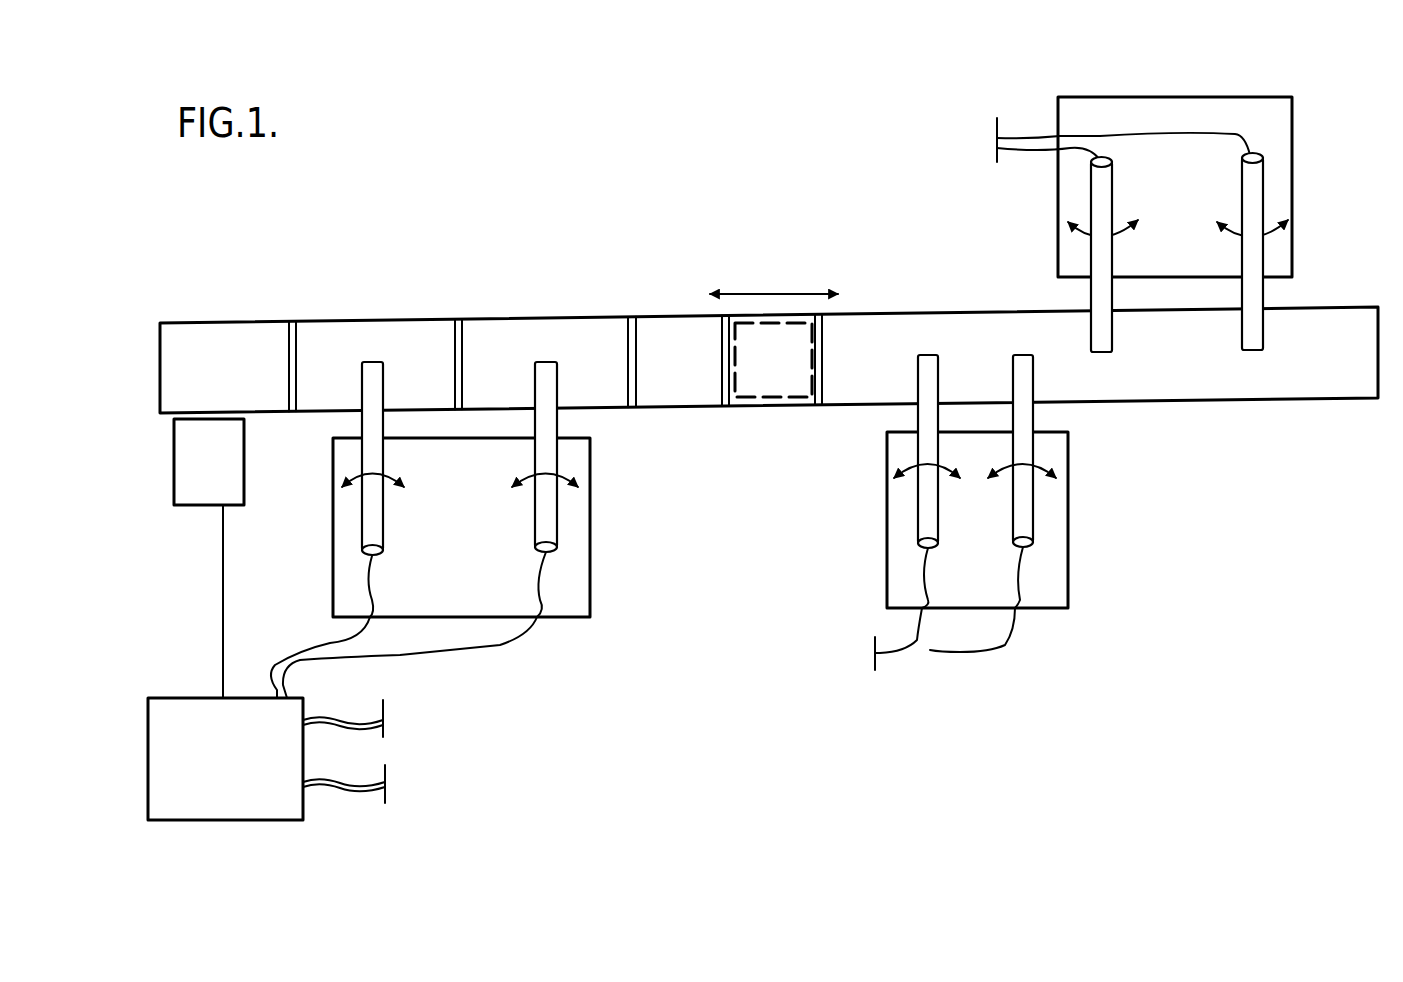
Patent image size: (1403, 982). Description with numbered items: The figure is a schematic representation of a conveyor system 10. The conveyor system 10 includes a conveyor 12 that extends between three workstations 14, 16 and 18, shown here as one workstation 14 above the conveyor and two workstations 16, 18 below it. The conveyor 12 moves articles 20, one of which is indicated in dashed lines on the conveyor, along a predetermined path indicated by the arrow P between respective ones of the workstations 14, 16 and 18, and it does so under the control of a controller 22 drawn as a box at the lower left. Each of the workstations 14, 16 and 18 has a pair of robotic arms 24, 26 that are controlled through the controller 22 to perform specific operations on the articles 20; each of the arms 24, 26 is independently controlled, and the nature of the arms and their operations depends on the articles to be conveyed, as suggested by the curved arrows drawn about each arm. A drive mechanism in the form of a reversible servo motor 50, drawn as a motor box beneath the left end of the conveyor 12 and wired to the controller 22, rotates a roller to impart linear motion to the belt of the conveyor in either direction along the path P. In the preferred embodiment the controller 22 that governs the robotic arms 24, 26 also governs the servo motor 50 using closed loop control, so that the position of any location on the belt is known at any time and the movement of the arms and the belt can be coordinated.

The conveyor system 10 is at (511, 266).
The conveyor 12 is at (593, 325).
The workstation 14 is at (1215, 118).
The workstation 16 is at (1050, 562).
The workstation 18 is at (577, 558).
The article 20 is at (750, 407).
The controller 22 is at (218, 792).
The robotic arm 24 is at (1099, 288).
The robotic arm 26 is at (1258, 290).
The servo motor 50 is at (196, 495).